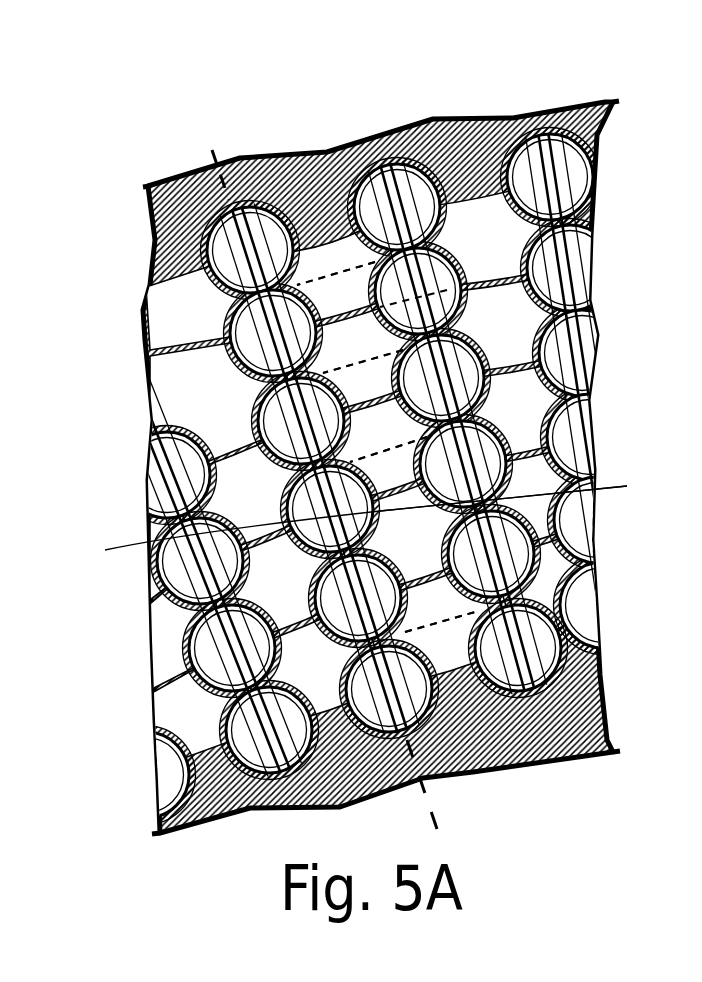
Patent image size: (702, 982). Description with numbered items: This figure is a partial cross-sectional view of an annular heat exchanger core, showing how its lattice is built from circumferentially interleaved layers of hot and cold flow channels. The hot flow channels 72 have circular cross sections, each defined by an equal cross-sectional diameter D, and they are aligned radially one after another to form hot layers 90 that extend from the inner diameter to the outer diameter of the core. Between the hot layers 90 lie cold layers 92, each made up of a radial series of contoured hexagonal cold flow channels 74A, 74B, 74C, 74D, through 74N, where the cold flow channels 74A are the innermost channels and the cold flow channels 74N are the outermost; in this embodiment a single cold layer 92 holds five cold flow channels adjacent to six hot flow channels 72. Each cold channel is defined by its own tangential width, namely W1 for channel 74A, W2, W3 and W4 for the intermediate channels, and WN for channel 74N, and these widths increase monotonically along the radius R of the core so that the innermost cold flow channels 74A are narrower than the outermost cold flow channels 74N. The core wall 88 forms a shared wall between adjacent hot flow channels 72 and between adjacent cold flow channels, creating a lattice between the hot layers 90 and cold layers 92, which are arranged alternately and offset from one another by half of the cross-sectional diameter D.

The core wall 88 is at (483, 723).
The hot layers 90 is at (510, 129).
The hot flow channels 72 is at (578, 148).
The cold layers 92 is at (576, 643).
The radius of core R is at (208, 142).
The cold flow channels (outermost) 74N is at (322, 232).
The cold flow channels 74D is at (322, 360).
The cold flow channels 74C is at (338, 448).
The cold flow channels 74B is at (380, 511).
The cold flow channels (innermost) 74A is at (398, 602).
The tangential width WN is at (343, 258).
The tangential width W4 is at (425, 326).
The tangential width W3 is at (398, 430).
The tangential width W2 is at (380, 511).
The tangential width W1 is at (430, 590).
The cross-sectional diameter D is at (462, 275).